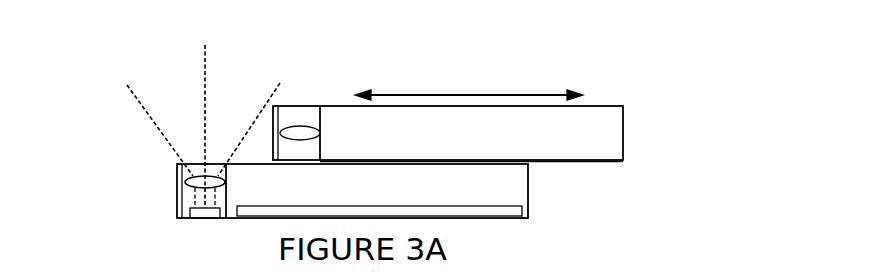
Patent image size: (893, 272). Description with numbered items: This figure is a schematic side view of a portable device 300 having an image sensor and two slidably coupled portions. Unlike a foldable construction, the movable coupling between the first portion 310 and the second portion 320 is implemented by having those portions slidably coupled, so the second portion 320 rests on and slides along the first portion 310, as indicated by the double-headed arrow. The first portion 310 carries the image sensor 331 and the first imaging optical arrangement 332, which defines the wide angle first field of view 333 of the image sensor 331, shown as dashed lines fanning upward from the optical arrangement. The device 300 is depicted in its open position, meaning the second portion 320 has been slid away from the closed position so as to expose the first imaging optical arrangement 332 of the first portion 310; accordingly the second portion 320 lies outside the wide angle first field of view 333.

The device 300 is at (638, 73).
The first portion 310 is at (507, 183).
The second portion 320 is at (605, 142).
The image sensor 331 is at (205, 220).
The first imaging optical arrangement 332 is at (177, 182).
The wide angle first field of view 333 is at (143, 109).